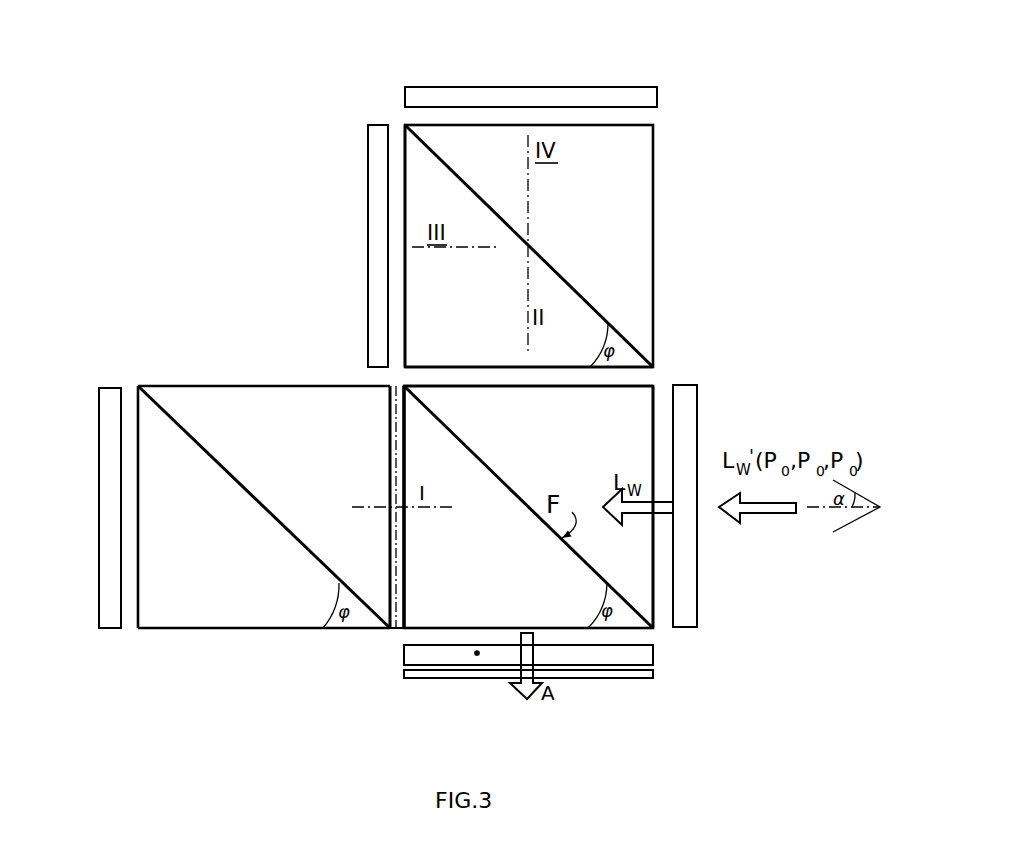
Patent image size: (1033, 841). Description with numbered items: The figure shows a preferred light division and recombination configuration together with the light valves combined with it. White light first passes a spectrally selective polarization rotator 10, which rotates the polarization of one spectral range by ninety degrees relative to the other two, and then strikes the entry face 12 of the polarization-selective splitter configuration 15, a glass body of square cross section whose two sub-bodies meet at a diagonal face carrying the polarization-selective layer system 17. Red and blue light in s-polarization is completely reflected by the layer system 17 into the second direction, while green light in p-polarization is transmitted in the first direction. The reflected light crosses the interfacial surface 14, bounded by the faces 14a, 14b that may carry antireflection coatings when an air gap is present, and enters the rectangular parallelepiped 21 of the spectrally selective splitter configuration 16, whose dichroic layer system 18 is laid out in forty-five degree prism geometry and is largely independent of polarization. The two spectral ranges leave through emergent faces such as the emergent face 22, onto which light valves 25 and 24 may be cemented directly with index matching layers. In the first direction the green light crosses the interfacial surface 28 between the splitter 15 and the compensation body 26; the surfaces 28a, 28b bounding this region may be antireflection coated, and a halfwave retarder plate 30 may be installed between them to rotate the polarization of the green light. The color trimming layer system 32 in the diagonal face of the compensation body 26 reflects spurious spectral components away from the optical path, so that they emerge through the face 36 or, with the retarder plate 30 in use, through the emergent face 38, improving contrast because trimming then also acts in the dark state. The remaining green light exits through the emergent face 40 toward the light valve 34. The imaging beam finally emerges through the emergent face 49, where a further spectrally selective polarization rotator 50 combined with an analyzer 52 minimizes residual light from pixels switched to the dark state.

The spectrally selective polarization rotator 10 is at (685, 570).
The entry face 12 is at (657, 589).
The interfacial surface 14 is at (626, 377).
The face of interfacial surface 14a is at (625, 388).
The face of interfacial surface 14b is at (489, 364).
The polarization-selective splitter configuration 15 is at (602, 467).
The spectrally selective splitter configuration 16 is at (602, 203).
The polarization-selective layer system 17 is at (490, 469).
The dichroic layer system 18 is at (548, 262).
The upper prism block 21 is at (606, 123).
The emergent face 22 is at (403, 208).
The light valve 24 is at (568, 96).
The light valve 25 is at (377, 162).
The compensation body 26 is at (313, 458).
The interfacial surface 28 is at (392, 630).
The surface of interfacial region 28a is at (408, 569).
The surface of interfacial region 28b is at (390, 522).
The halfwave retarder plate 30 is at (397, 631).
The color trimming layer system 32 is at (265, 506).
The light valve 34 is at (110, 588).
The face 36 is at (221, 557).
The emergent face 38 is at (241, 385).
The emergent face 40 is at (136, 530).
The emergent face 49 is at (435, 630).
The spectrally selective polarization rotator 50 is at (477, 655).
The analyzer 52 is at (567, 674).